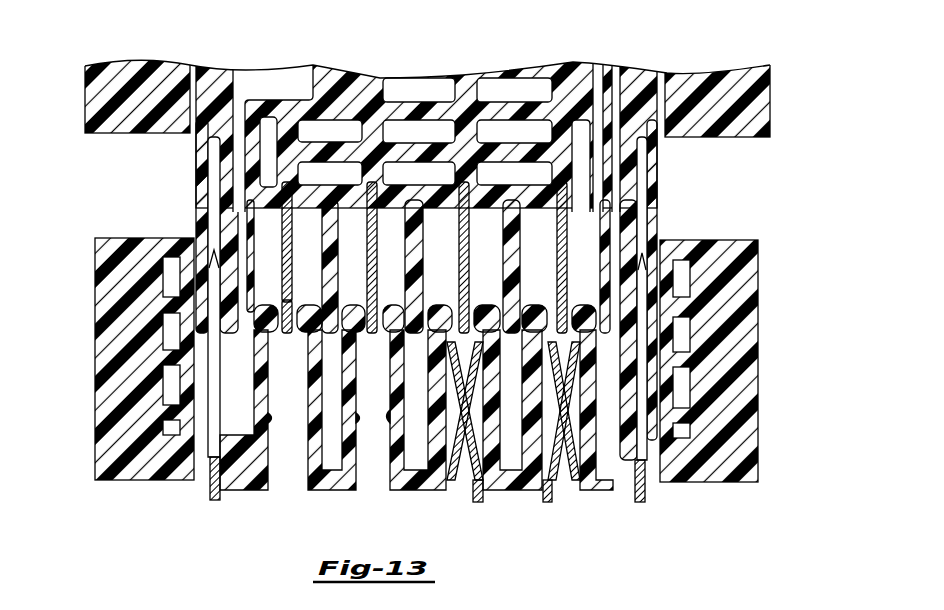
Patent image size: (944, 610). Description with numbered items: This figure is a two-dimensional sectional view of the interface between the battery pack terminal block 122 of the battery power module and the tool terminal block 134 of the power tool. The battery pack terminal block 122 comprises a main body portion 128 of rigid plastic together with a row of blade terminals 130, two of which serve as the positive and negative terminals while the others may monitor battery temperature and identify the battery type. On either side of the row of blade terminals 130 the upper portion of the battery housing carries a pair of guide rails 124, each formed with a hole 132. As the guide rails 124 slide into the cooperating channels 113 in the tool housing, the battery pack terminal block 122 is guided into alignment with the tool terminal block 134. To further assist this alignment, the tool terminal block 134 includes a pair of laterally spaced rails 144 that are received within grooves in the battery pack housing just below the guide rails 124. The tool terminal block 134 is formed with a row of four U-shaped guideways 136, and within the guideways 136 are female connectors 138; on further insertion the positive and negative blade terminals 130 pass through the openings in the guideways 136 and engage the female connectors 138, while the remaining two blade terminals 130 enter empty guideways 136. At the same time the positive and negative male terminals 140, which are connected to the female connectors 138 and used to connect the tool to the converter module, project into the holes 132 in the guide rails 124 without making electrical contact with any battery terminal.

The channels 113 is at (105, 73).
The battery pack terminal block 122 is at (470, 68).
The guide rails 124 is at (199, 130).
The main body portion 128 is at (260, 78).
The blade terminals 130 is at (375, 240).
The holes 132 is at (287, 240).
The tool terminal block 134 is at (420, 497).
The U-shaped guideways 136 is at (287, 345).
The female connectors 138 is at (453, 375).
The male terminals 140 is at (215, 353).
The rails 144 is at (123, 280).